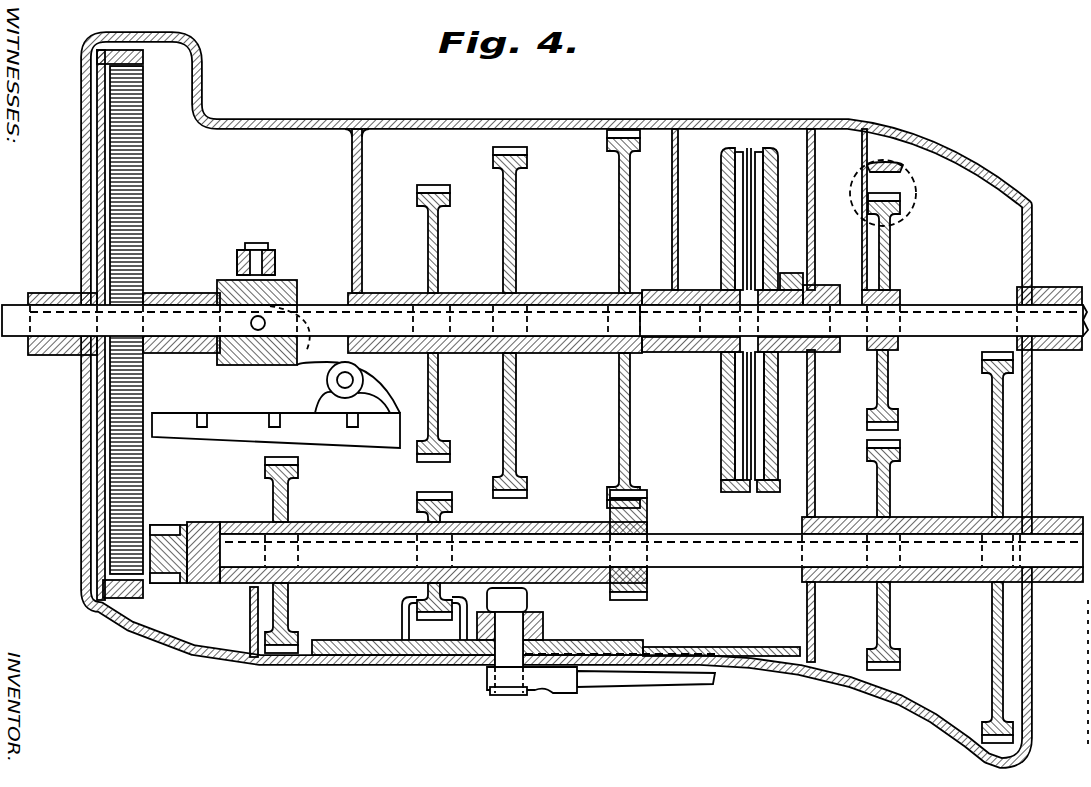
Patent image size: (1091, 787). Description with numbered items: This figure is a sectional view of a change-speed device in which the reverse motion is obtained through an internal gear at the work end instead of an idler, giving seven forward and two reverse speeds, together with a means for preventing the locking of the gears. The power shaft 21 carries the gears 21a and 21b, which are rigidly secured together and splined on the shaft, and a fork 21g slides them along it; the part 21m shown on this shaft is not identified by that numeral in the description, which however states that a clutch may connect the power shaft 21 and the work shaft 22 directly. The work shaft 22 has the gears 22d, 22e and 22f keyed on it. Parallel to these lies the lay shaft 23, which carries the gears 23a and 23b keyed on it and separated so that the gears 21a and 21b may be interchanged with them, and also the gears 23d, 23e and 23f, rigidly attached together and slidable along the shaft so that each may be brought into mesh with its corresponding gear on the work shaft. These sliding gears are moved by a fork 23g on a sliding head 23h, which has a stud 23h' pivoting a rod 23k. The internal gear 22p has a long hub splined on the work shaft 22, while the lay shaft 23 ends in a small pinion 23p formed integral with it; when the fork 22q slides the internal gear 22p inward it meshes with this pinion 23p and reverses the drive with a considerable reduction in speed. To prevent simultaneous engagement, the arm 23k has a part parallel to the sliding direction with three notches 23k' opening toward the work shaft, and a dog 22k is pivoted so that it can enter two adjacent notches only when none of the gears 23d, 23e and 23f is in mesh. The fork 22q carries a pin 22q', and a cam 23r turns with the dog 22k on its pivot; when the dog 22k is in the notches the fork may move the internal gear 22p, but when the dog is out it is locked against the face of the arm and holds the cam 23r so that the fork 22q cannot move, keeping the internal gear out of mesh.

The power shaft 21 is at (990, 312).
The gear 21a is at (892, 242).
The gear 21b is at (920, 352).
The fork 21g is at (900, 188).
The clutch disc 21m is at (724, 457).
The work shaft 22 is at (53, 330).
The gear 22d is at (425, 185).
The gear 22e is at (517, 210).
The gear 22f is at (612, 240).
The dog 22k is at (370, 368).
The internal gear 22p is at (143, 212).
The fork 22q is at (272, 303).
The pin 22q' is at (300, 315).
The lay shaft 23 is at (717, 555).
The gear 23a is at (893, 481).
The gear 23b is at (987, 622).
The gear 23d is at (267, 490).
The gear 23e is at (425, 492).
The gear 23f is at (628, 588).
The fork 23g is at (412, 627).
The sliding head 23h is at (539, 640).
The stud 23h' is at (532, 698).
The arm 23k is at (433, 555).
The notches 23k' is at (273, 433).
The pinion 23p is at (170, 577).
The cam 23r is at (313, 355).